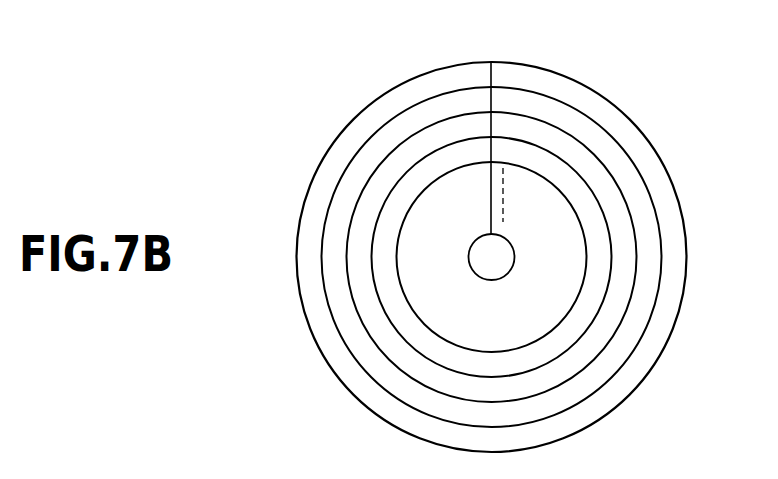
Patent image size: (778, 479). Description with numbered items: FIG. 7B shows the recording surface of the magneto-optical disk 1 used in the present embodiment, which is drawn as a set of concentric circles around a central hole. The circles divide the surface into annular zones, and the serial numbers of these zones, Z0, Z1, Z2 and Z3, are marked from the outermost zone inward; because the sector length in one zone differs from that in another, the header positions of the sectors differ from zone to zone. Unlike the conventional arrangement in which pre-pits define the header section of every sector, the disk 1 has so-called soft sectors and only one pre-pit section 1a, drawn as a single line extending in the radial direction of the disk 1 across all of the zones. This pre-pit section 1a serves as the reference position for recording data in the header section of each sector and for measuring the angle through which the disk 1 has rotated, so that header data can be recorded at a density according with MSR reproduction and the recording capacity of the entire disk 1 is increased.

The magneto-optical disk 1 is at (632, 115).
The pre-pit section 1a is at (492, 62).
The zone Z0 is at (492, 245).
The zone Z1 is at (492, 245).
The zone Z2 is at (492, 245).
The zone Z3 is at (492, 245).